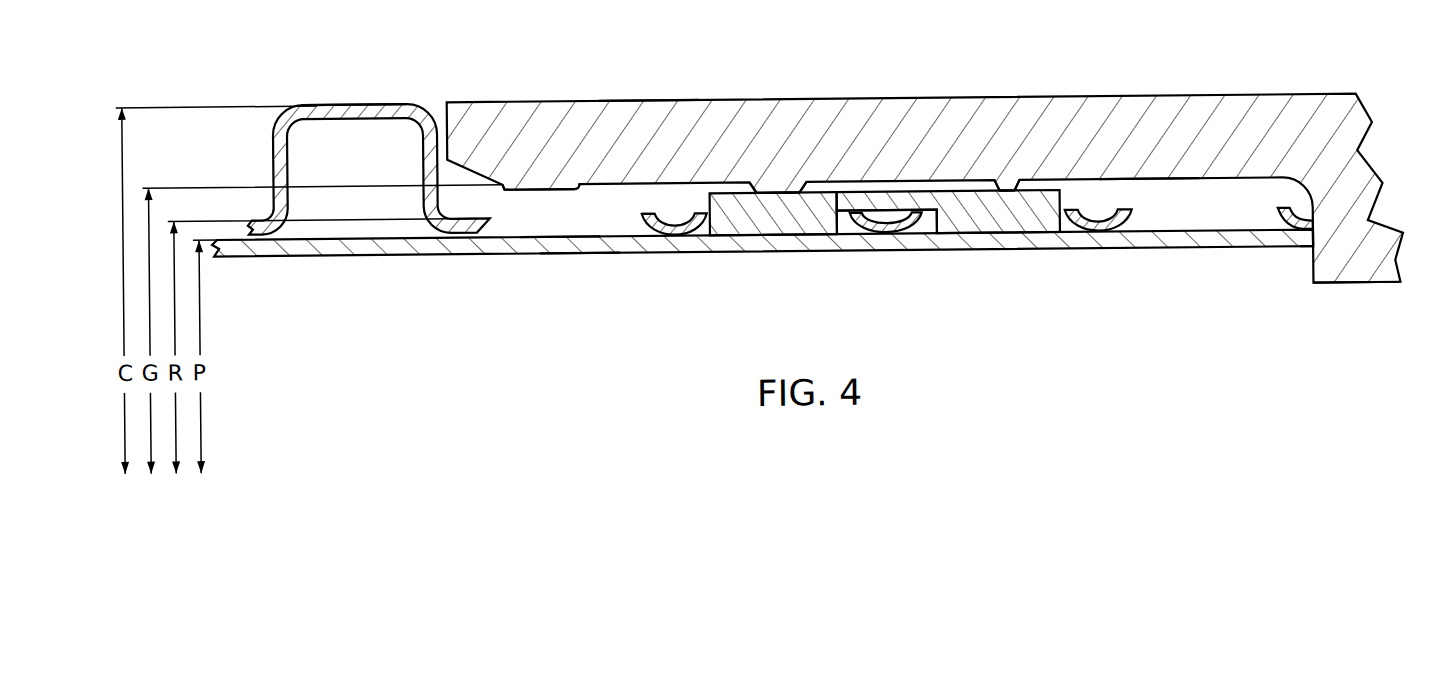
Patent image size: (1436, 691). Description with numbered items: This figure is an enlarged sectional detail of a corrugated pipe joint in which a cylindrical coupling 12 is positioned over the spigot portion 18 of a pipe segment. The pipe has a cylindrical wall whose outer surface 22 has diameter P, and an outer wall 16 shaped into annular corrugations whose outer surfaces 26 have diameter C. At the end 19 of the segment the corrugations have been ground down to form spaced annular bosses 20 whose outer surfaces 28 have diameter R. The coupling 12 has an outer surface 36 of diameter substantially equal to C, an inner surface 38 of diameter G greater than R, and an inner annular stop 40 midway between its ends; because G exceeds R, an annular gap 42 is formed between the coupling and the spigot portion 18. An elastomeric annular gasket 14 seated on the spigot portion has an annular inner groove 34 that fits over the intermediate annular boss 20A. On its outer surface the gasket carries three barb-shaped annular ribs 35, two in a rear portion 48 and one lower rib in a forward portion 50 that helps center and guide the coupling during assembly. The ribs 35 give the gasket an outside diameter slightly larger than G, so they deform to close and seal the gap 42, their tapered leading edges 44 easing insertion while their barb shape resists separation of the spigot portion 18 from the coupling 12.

The cylindrical coupling 12 is at (1238, 95).
The annular gasket 14 is at (772, 236).
The outer wall corrugations 16 is at (432, 60).
The spigot portion 18 is at (570, 316).
The end 19 is at (1302, 268).
The annular bosses 20 is at (668, 242).
The intermediate annular boss 20A is at (887, 240).
The outer surface 22 is at (540, 238).
The outer surfaces of corrugations 26 is at (293, 75).
The outer surfaces of bosses 28 is at (648, 216).
The annular inner groove 34 is at (927, 243).
The barb-shaped annular ribs 35 is at (754, 188).
The outer surface of coupling 36 is at (668, 104).
The inner surface of coupling 38 is at (580, 194).
The inner annular stop 40 is at (1330, 294).
The annular gap 42 is at (1118, 192).
The tapered leading edges 44 is at (775, 188).
The rear portion of gasket 48 is at (741, 229).
The forward portion of gasket 50 is at (1000, 222).